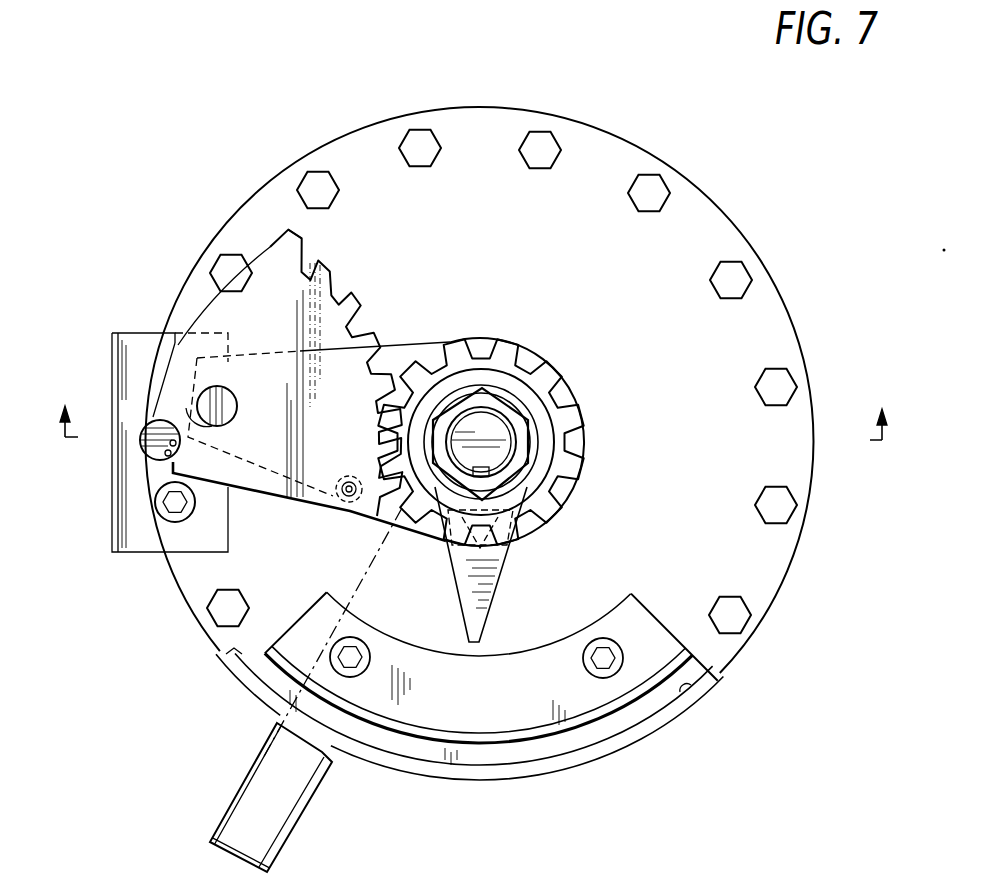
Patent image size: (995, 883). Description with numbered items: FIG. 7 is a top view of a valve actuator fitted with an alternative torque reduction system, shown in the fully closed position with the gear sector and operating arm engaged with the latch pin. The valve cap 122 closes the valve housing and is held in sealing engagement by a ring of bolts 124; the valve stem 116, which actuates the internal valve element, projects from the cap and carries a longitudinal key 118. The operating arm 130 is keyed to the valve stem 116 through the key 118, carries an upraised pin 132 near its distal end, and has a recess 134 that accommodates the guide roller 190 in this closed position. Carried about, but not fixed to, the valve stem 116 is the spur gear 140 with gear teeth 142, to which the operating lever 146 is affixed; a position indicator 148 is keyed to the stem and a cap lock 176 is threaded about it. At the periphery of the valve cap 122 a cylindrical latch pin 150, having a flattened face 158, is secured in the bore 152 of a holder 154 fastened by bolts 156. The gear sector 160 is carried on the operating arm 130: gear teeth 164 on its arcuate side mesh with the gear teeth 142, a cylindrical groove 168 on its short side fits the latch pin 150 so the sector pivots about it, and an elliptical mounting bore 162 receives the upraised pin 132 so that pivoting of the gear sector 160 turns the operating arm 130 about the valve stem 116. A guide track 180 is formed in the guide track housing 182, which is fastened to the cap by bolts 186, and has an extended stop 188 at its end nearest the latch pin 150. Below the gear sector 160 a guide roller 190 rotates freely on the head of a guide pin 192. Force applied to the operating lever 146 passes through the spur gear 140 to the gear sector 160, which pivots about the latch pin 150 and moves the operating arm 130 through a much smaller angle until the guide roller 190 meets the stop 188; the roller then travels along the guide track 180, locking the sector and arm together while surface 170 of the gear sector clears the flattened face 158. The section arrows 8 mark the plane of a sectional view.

The section line 8- 8 is at (472, 410).
The valve stem 116 is at (507, 443).
The key 118 is at (483, 476).
The valve cap 122 is at (707, 212).
The bolts 124 is at (742, 272).
The operating arm 130 is at (410, 403).
The upraised pin 132 is at (234, 403).
The recess 134 is at (330, 480).
The spur gear 140 is at (552, 400).
The gear teeth 142 is at (518, 357).
The operating lever 146 is at (295, 826).
The position indicator 148 is at (488, 598).
The latch pin 150 is at (155, 450).
The bore 152 is at (170, 458).
The holder 154 is at (133, 333).
The bolts 156 is at (172, 507).
The flattened face 158 is at (150, 437).
The gear sector 160 is at (271, 309).
The elliptical mounting bore 162 is at (203, 394).
The gear teeth 164 is at (292, 232).
The cylindrical groove 168 is at (212, 485).
The surface 170 is at (147, 420).
The cap lock 176 is at (481, 398).
The guide track 180 is at (683, 692).
The guide track housing 182 is at (483, 720).
The bolts 186 is at (607, 668).
The extended stop 188 is at (230, 656).
The guide roller 190 is at (350, 482).
The guide pin 192 is at (348, 502).